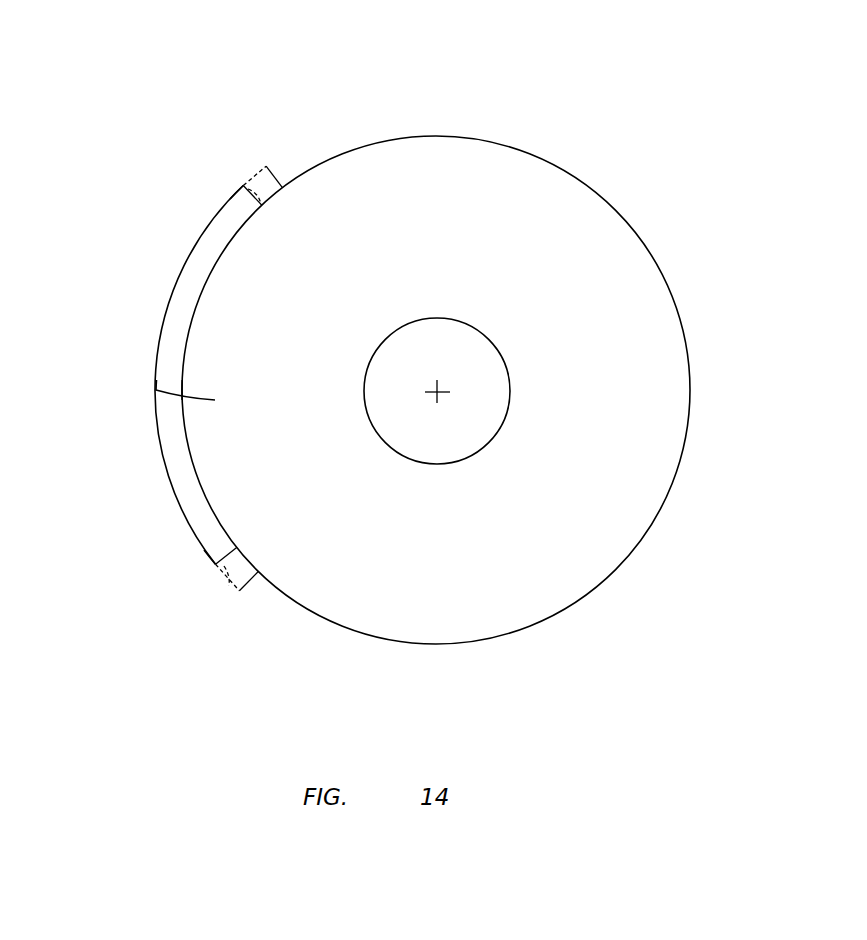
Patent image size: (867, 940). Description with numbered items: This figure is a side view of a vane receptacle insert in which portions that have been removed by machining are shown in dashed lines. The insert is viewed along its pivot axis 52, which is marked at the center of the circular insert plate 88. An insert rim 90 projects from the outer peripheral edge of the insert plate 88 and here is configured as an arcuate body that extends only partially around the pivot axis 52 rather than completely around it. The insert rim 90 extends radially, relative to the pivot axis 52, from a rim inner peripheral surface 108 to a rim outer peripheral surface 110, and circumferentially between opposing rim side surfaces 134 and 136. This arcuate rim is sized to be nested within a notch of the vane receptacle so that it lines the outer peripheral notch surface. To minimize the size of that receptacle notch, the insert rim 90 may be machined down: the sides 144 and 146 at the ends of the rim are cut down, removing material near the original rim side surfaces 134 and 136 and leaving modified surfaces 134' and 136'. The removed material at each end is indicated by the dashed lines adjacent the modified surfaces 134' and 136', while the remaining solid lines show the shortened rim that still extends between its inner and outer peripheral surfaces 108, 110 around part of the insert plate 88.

The pivot axis 52 is at (437, 392).
The insert plate 88 is at (640, 228).
The insert rim 90 is at (177, 503).
The rim inner peripheral surface 108 is at (183, 398).
The rim outer peripheral surface 110 is at (155, 408).
The rim side surface 134 is at (249, 612).
The modified surface 134' is at (194, 606).
The rim side surface 136 is at (277, 144).
The modified surface 136' is at (224, 165).
The side of the receptacle notch 144 is at (233, 592).
The side of the receptacle notch 146 is at (267, 167).